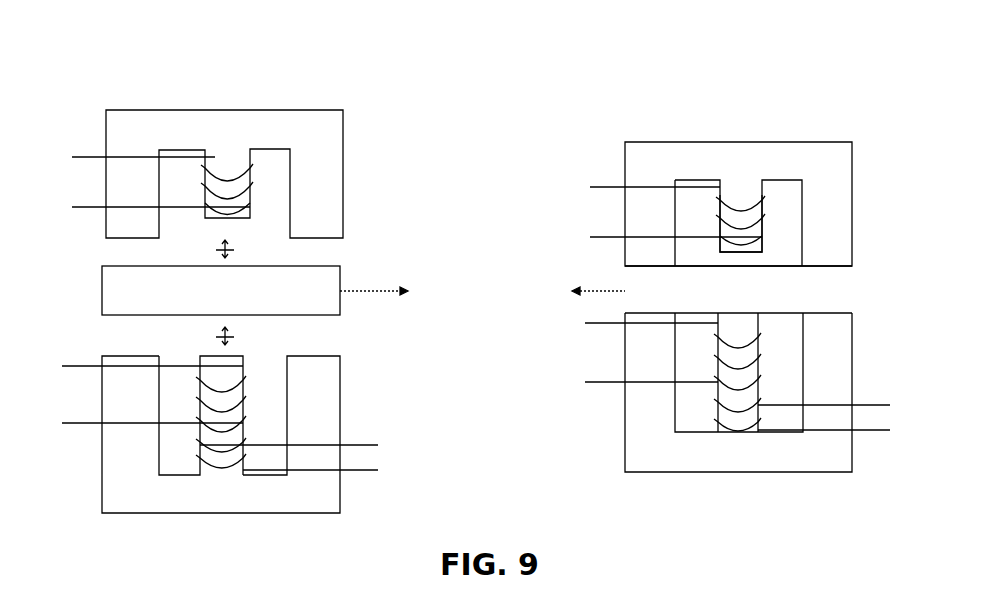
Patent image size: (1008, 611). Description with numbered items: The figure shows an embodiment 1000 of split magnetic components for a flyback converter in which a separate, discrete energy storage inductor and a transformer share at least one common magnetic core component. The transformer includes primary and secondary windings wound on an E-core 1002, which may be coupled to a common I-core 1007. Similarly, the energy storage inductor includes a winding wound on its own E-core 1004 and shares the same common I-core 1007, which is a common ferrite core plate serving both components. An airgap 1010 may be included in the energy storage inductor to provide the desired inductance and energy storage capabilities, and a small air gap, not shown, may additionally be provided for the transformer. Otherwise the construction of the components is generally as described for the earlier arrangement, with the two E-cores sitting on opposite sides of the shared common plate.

The embodiment of split magnetic components 1000 is at (514, 72).
The E-core 1004 is at (144, 110).
The common I-core 1007 is at (106, 266).
The E-core 1002 is at (106, 480).
The airgap 1010 is at (740, 262).